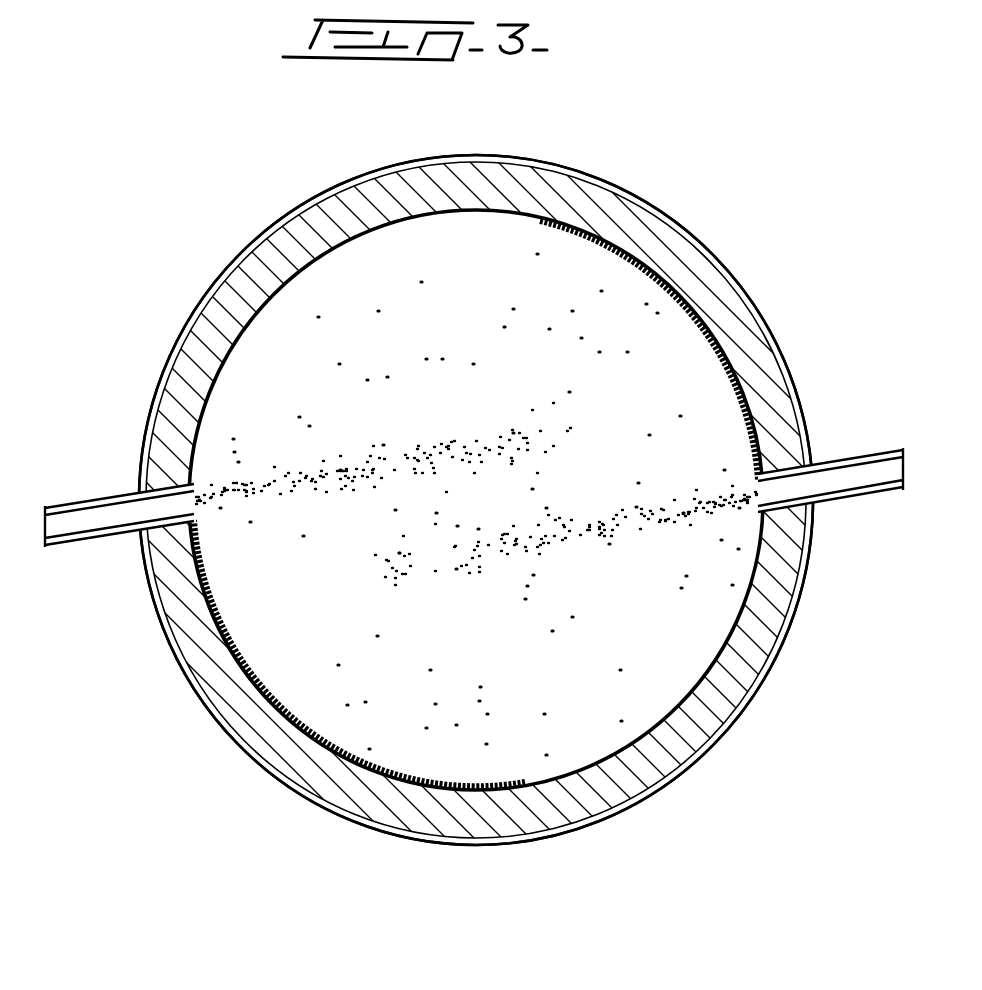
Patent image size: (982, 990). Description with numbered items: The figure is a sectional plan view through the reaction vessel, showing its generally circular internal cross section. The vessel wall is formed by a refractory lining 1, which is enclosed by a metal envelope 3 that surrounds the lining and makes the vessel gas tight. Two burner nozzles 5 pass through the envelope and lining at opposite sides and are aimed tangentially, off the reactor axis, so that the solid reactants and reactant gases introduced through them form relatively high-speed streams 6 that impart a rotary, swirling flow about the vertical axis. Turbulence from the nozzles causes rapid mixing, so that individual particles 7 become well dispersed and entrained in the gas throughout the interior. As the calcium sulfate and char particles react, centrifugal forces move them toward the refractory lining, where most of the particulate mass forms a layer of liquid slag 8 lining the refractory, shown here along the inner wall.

The refractory lining 1 is at (303, 233).
The metal envelope 3 is at (634, 196).
The burner nozzle 5 is at (84, 500).
The high-speed stream 6 is at (220, 478).
The particles 7 is at (287, 388).
The layer of liquid slag 8 is at (730, 383).